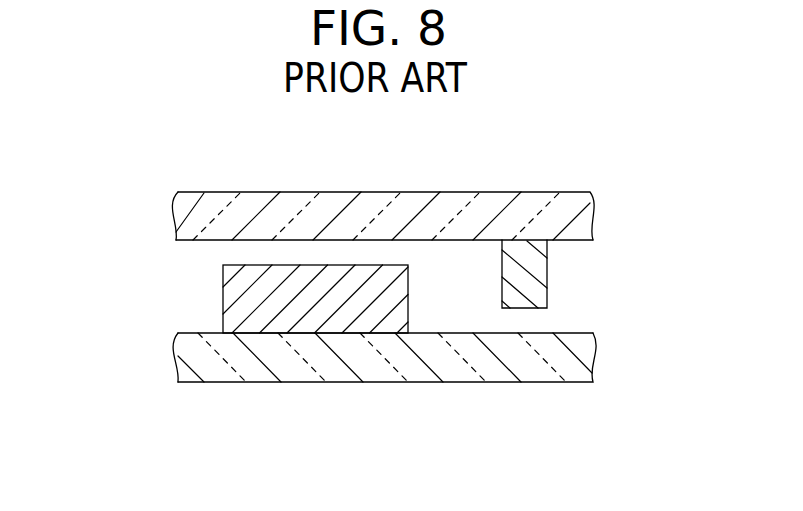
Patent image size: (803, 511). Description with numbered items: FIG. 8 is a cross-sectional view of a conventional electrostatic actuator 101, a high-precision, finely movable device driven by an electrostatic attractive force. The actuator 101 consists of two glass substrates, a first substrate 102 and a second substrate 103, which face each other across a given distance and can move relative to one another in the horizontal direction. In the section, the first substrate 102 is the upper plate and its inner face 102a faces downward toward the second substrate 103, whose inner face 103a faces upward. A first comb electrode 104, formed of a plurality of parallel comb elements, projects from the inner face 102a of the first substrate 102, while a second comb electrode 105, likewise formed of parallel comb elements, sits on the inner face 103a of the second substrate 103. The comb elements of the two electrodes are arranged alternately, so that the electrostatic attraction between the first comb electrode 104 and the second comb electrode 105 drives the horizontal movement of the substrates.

The electrostatic actuator 101 is at (557, 168).
The first substrate 102 is at (412, 192).
The inner face of the first substrate 102a is at (207, 244).
The second substrate 103 is at (500, 368).
The inner face of the second substrate 103a is at (207, 333).
The first comb electrode 104 is at (540, 273).
The second comb electrode 105 is at (240, 293).